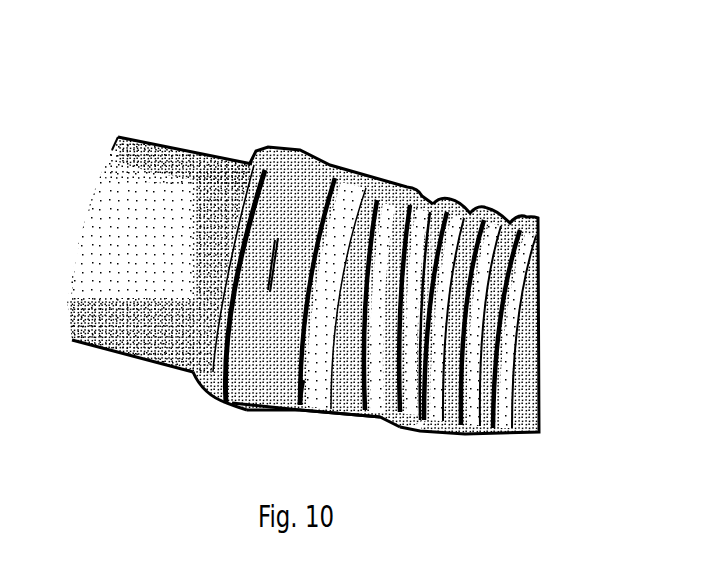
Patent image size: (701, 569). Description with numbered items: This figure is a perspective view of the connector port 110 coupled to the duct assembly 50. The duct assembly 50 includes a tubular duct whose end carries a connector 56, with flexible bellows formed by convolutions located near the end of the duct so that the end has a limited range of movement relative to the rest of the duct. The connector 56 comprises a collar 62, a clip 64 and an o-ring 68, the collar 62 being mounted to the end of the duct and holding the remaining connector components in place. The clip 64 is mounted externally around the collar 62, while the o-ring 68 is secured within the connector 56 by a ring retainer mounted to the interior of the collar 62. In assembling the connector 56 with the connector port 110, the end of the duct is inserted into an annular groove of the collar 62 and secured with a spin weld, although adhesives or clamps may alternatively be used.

The connector port 110 is at (197, 139).
The connector 56 is at (347, 140).
The duct assembly 50 is at (515, 337).
The clip 64 is at (192, 374).
The collar 62 is at (273, 408).
The o-ring 68 is at (320, 420).